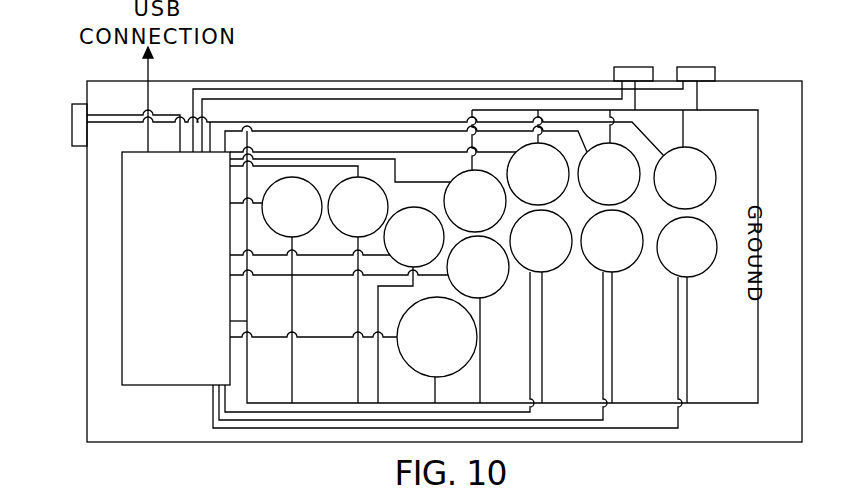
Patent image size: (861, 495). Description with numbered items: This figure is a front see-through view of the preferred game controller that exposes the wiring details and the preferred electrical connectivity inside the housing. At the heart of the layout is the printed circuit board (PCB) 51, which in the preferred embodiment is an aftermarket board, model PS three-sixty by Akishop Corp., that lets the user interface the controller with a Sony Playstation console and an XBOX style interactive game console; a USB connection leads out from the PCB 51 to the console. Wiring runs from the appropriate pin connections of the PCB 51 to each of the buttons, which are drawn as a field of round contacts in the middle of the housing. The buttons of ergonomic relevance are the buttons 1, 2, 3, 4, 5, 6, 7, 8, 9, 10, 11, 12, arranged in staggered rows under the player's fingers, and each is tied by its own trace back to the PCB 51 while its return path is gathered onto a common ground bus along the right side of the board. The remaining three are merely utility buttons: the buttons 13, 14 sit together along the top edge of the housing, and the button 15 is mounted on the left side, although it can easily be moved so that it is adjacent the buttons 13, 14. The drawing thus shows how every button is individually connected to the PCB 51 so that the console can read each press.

The button 1 is at (285, 219).
The button 2 is at (351, 219).
The button 3 is at (407, 249).
The button 4 is at (430, 349).
The button 5 is at (468, 213).
The button 6 is at (471, 279).
The button 7 is at (531, 186).
The button 8 is at (534, 253).
The button 9 is at (602, 186).
The button 10 is at (599, 253).
The button 11 is at (672, 190).
The button 12 is at (674, 259).
The button 13 is at (612, 75).
The button 14 is at (685, 67).
The button 15 is at (68, 110).
The printed circuit board 51 is at (170, 184).